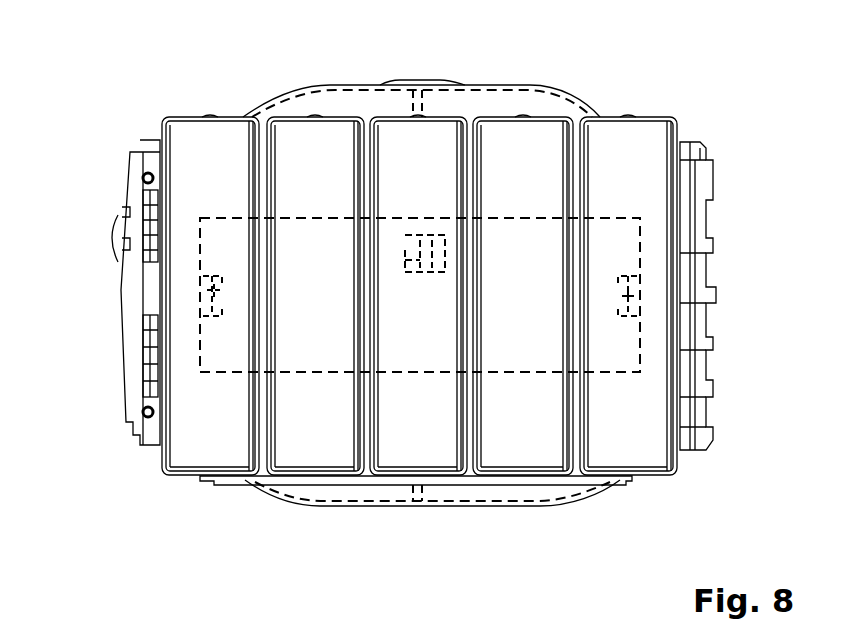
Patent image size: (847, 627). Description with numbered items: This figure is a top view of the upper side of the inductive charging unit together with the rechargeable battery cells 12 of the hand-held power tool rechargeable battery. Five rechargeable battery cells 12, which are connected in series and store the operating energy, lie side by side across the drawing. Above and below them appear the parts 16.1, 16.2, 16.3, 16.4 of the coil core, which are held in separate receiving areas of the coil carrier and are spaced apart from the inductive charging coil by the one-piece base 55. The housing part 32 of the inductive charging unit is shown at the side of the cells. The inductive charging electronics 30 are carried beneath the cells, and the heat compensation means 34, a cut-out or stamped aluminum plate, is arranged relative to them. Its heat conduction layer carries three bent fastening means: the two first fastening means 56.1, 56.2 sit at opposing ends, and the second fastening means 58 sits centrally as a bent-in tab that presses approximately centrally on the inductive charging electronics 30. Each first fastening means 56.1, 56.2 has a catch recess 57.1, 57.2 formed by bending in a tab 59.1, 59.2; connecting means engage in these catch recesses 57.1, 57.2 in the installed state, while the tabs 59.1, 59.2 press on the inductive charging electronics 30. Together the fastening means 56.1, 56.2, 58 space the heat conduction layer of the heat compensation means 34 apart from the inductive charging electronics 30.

The rechargeable battery cell 12 is at (639, 456).
The part of coil core 16.1 is at (335, 105).
The part of coil core 16.2 is at (497, 105).
The part of coil core 16.3 is at (537, 487).
The part of coil core 16.4 is at (283, 486).
The inductive charging electronics 30 is at (480, 490).
The housing part 32 is at (699, 405).
The heat compensation means 34 is at (315, 360).
The base 55 is at (392, 619).
The first fastening means 56.1 is at (204, 208).
The first fastening means 56.2 is at (638, 208).
The catch recess 57.1 is at (196, 271).
The catch recess 57.2 is at (654, 273).
The second fastening means 58 is at (433, 276).
The tab 59.1 is at (205, 291).
The tab 59.2 is at (643, 294).